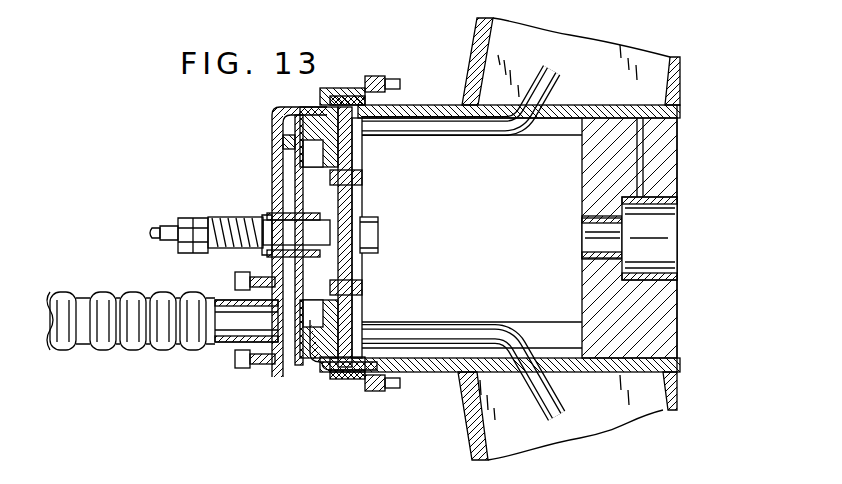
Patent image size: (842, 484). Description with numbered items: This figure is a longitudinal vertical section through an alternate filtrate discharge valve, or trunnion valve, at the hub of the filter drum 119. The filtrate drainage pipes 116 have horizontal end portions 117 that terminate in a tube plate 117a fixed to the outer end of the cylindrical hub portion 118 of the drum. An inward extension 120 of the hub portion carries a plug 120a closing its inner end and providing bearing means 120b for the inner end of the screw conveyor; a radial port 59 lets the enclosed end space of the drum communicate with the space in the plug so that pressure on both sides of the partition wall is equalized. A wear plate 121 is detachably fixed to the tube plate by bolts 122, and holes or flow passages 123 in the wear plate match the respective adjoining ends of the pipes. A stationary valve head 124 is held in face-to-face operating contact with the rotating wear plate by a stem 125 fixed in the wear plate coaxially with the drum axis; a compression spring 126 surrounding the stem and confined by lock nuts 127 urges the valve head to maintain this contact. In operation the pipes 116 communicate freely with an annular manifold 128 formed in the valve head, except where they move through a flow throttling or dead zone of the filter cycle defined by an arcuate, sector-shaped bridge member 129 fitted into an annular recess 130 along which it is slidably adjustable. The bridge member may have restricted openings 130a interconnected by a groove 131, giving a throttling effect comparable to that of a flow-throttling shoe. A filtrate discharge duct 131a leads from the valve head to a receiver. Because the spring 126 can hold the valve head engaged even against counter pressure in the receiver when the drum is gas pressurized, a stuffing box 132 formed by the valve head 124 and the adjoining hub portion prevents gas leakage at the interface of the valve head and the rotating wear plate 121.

The radial port 59 is at (645, 155).
The filtrate drainage pipe 116 is at (553, 84).
The horizontal end portions 117 is at (442, 145).
The tube plate 117a is at (367, 158).
The cylindrical hub portion 118 is at (432, 106).
The filter drum 119 is at (468, 52).
The inward extension 120 is at (580, 108).
The plug 120a is at (597, 182).
The bearing means 120b is at (660, 213).
The wear plate 121 is at (356, 203).
The bolts 122 is at (345, 188).
The flow passages 123 is at (342, 317).
The stationary valve head 124 is at (258, 206).
The stem 125 is at (296, 232).
The compression spring 126 is at (233, 215).
The lock nuts 127 is at (207, 253).
The annular manifold 128 is at (288, 168).
The bridge member 129 is at (310, 142).
The annular recess 130 is at (312, 355).
The restricted openings 130a is at (303, 130).
The groove 131 is at (333, 128).
The filtrate discharge duct 131a is at (240, 333).
The stuffing box 132 is at (380, 78).